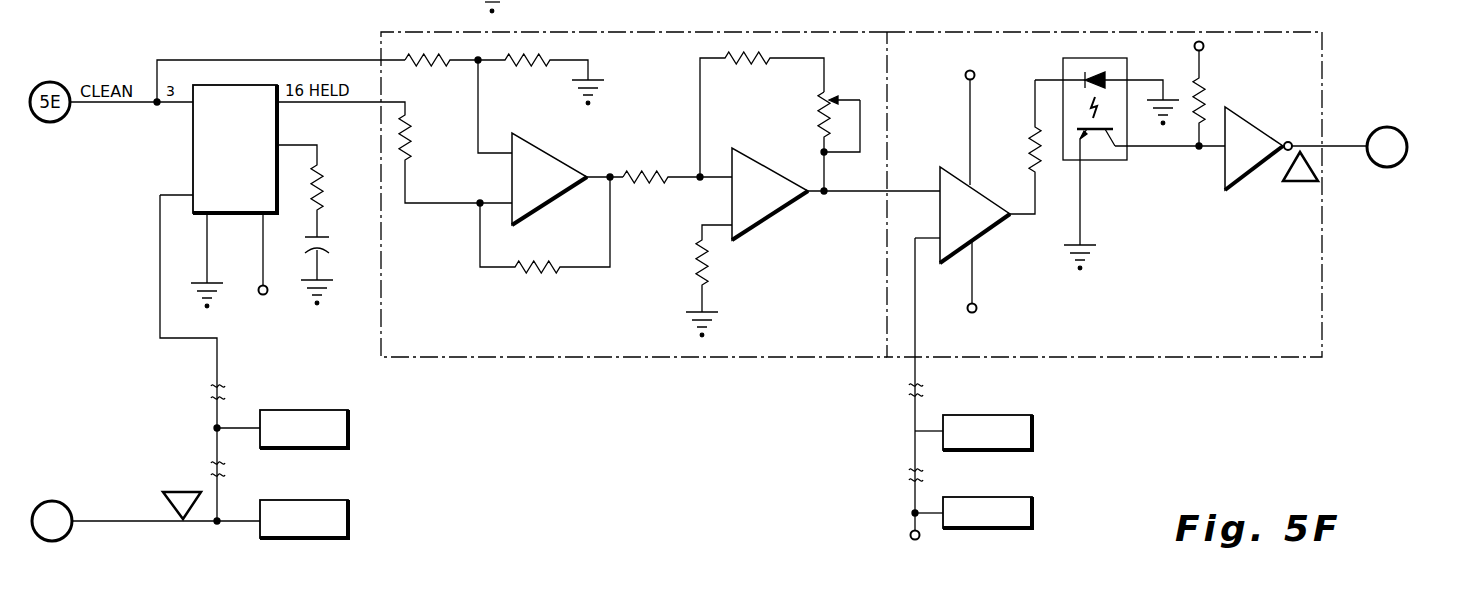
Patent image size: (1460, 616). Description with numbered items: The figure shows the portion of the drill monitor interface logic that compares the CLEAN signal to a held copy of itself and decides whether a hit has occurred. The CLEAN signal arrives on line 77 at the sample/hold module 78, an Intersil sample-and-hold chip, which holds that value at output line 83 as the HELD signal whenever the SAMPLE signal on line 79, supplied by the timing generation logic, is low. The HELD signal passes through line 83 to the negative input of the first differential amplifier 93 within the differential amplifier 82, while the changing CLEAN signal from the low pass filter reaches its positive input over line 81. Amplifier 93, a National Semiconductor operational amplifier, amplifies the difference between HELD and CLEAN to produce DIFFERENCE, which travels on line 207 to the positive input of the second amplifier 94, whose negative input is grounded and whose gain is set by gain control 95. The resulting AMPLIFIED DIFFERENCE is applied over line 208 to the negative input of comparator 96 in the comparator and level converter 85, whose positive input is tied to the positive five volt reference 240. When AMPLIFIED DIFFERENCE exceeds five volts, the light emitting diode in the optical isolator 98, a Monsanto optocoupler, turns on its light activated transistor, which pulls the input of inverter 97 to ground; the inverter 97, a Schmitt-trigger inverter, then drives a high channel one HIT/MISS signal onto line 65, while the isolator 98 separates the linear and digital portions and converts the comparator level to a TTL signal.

The line 65 is at (1345, 145).
The line 77 is at (111, 103).
The sample/hold module 78 is at (193, 151).
The line 79 is at (217, 350).
The line 81 is at (157, 59).
The differential amplifier 82 is at (753, 32).
The output line 83 is at (441, 205).
The comparator and level converter 85 is at (1262, 32).
The first differential amplifier 93 is at (562, 161).
The second amplifier 94 is at (759, 165).
The gain control 95 is at (819, 107).
The comparator 96 is at (985, 191).
The inverter 97 is at (1246, 124).
The optical isolator 98 is at (1108, 160).
The line 207 is at (620, 175).
The line 208 is at (854, 191).
The positive five volt reference 240 is at (915, 447).